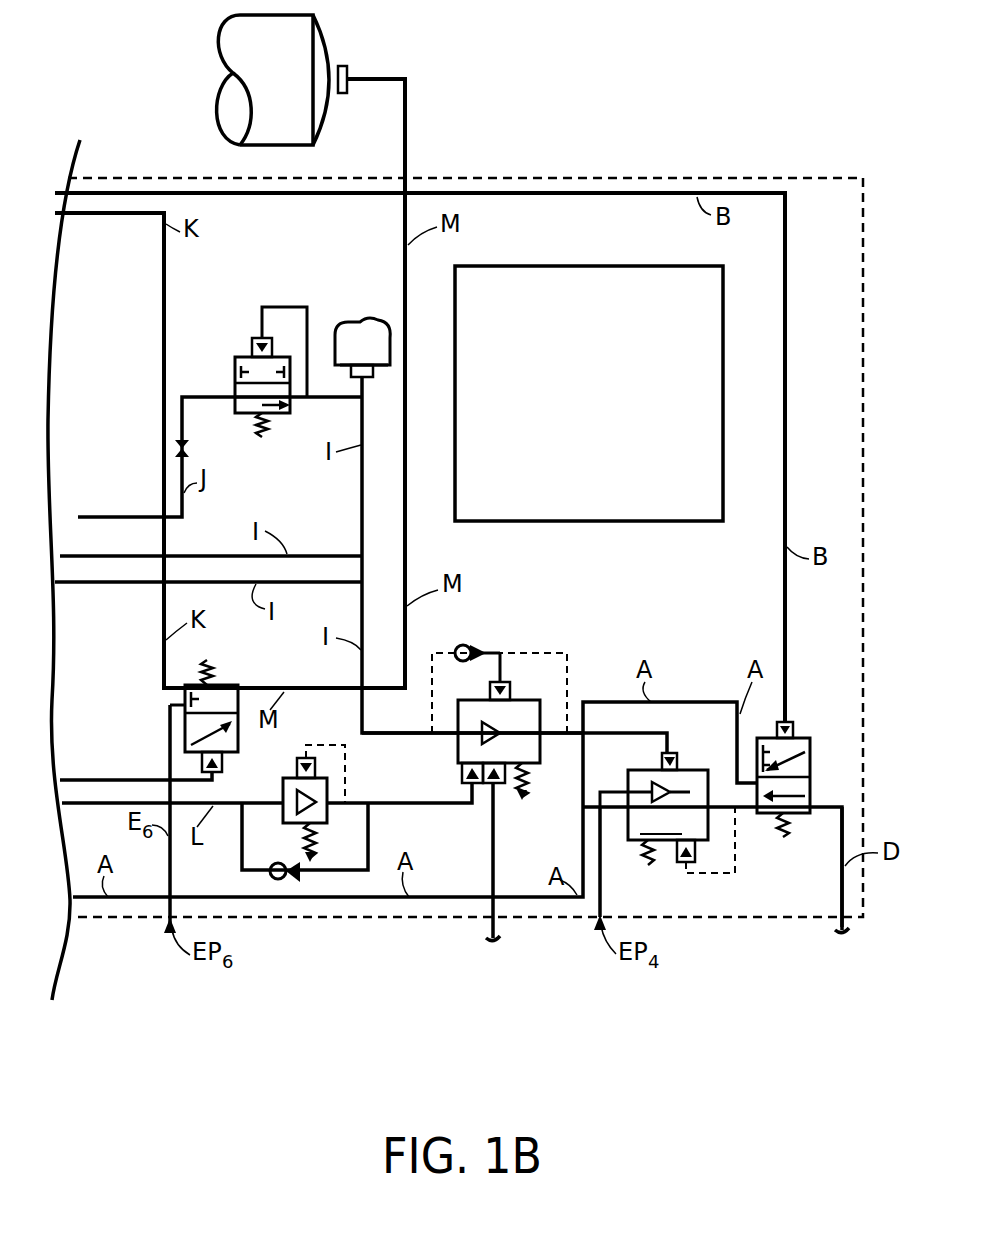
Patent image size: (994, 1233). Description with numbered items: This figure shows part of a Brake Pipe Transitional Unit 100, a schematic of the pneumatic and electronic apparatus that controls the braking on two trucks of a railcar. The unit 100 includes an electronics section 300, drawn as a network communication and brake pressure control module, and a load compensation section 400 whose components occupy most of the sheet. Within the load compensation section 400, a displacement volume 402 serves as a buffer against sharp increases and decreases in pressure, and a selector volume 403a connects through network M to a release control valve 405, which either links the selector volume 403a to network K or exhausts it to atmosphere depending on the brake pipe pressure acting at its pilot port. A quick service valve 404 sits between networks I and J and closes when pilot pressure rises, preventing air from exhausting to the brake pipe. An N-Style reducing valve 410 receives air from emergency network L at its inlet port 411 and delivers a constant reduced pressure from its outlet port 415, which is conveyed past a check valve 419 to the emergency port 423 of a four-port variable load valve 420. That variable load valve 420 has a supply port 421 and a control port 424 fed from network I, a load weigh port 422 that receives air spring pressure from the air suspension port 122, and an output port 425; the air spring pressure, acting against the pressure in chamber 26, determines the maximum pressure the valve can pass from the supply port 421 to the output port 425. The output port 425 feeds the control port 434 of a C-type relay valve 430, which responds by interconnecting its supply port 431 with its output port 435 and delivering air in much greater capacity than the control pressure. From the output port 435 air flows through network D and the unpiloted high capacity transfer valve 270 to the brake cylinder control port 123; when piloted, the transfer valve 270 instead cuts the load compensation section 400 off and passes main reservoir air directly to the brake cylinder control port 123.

The Brake Pipe Transitional Unit 100 is at (814, 150).
The electronics section 300 is at (592, 266).
The load compensation section 400 is at (719, 609).
The displacement volume 402 is at (341, 328).
The selector volume 403a is at (325, 52).
The quick service valve 404 is at (235, 363).
The release control valve 405 is at (262, 684).
The N-Style reducing valve 410 is at (297, 840).
The inlet port 411 is at (283, 800).
The outlet port 415 is at (330, 806).
The check valve 419 is at (300, 943).
The variable load valve 420 is at (480, 714).
The supply port 421 is at (456, 731).
The load weigh port 422 is at (502, 788).
The emergency port 423 is at (477, 788).
The control port 424 is at (516, 674).
The output port 425 is at (543, 735).
The chamber 26 is at (466, 647).
The high capacity transfer valve 270 is at (790, 722).
The C-type relay valve 430 is at (699, 808).
The supply port 431 is at (608, 806).
The control port 434 is at (680, 760).
The output port 435 is at (718, 808).
The air suspension port 122 is at (508, 954).
The brake cylinder control port 123 is at (858, 957).